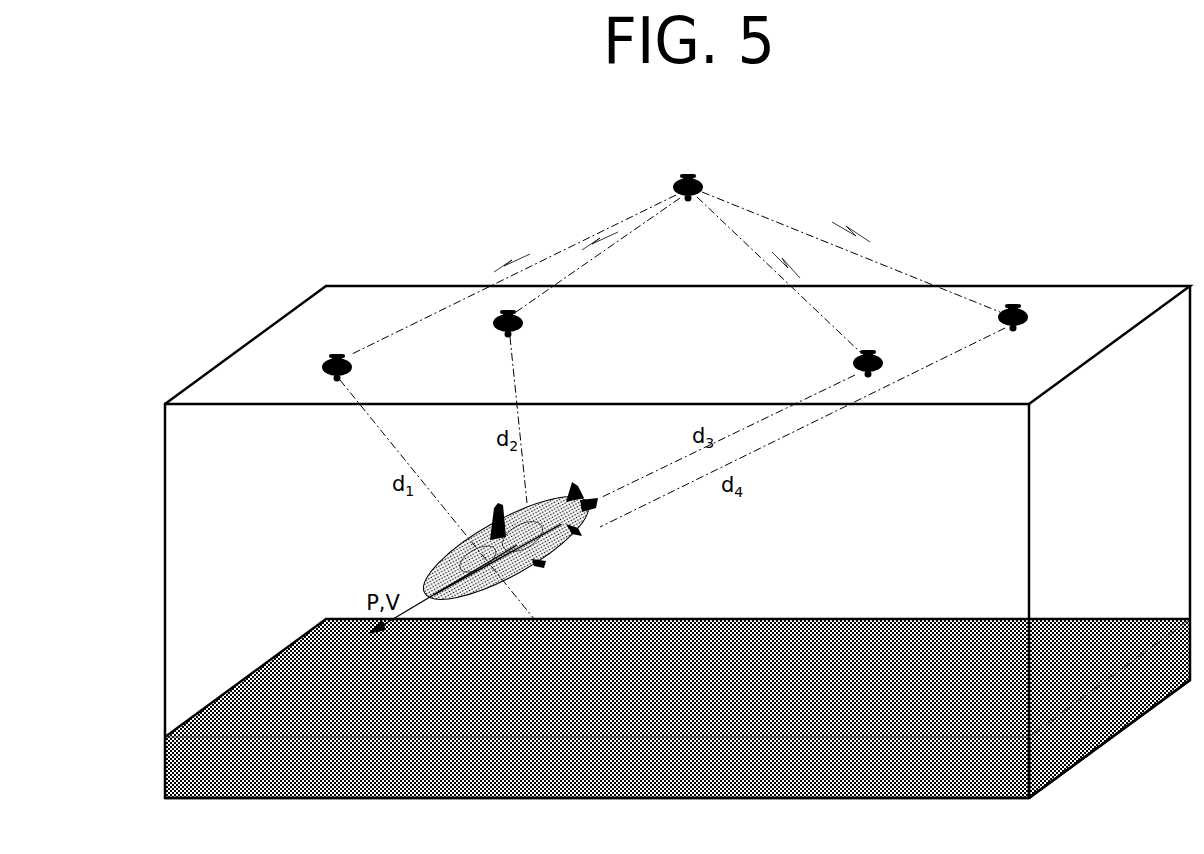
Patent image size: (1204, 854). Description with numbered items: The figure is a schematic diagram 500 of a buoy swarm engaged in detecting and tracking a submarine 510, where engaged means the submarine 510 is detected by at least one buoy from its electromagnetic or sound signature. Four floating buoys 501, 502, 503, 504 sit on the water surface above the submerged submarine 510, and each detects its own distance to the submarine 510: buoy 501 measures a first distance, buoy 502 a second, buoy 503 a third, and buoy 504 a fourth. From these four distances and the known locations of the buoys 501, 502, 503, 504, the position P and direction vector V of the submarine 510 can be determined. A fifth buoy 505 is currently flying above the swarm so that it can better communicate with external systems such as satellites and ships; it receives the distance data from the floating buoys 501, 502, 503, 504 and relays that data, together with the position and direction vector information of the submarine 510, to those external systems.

The schematic diagram 500 is at (300, 118).
The buoy 501 is at (325, 357).
The buoy 502 is at (526, 328).
The buoy 503 is at (884, 360).
The buoy 504 is at (1030, 307).
The buoy 505 is at (701, 180).
The submarine 510 is at (677, 708).